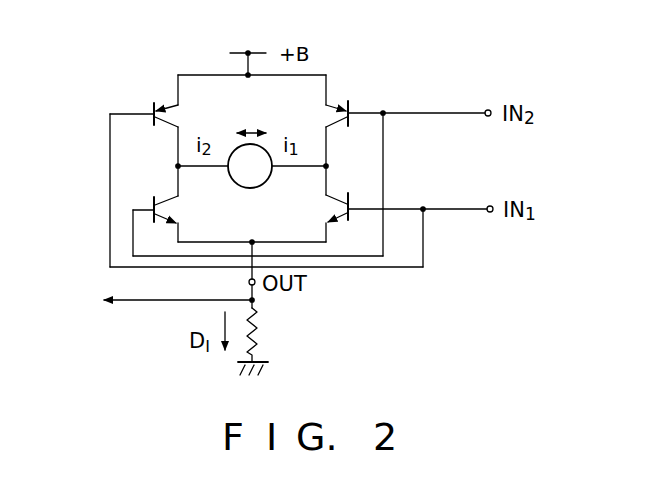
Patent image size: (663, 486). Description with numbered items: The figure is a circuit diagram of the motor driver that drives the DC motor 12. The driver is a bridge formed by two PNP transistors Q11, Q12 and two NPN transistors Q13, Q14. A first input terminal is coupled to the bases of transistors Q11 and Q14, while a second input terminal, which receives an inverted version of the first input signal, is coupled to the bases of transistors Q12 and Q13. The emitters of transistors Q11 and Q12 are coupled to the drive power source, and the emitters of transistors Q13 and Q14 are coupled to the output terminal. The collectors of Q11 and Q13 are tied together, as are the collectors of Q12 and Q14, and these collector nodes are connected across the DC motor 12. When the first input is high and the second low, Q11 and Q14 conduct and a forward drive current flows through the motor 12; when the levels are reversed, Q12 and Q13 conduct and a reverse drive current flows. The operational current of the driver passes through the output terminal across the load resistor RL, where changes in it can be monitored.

The PNP transistor Q11 is at (166, 114).
The PNP transistor Q12 is at (336, 113).
The NPN transistor Q13 is at (166, 211).
The NPN transistor Q14 is at (336, 210).
The DC motor 12 is at (250, 188).
The load resistor RL is at (257, 328).